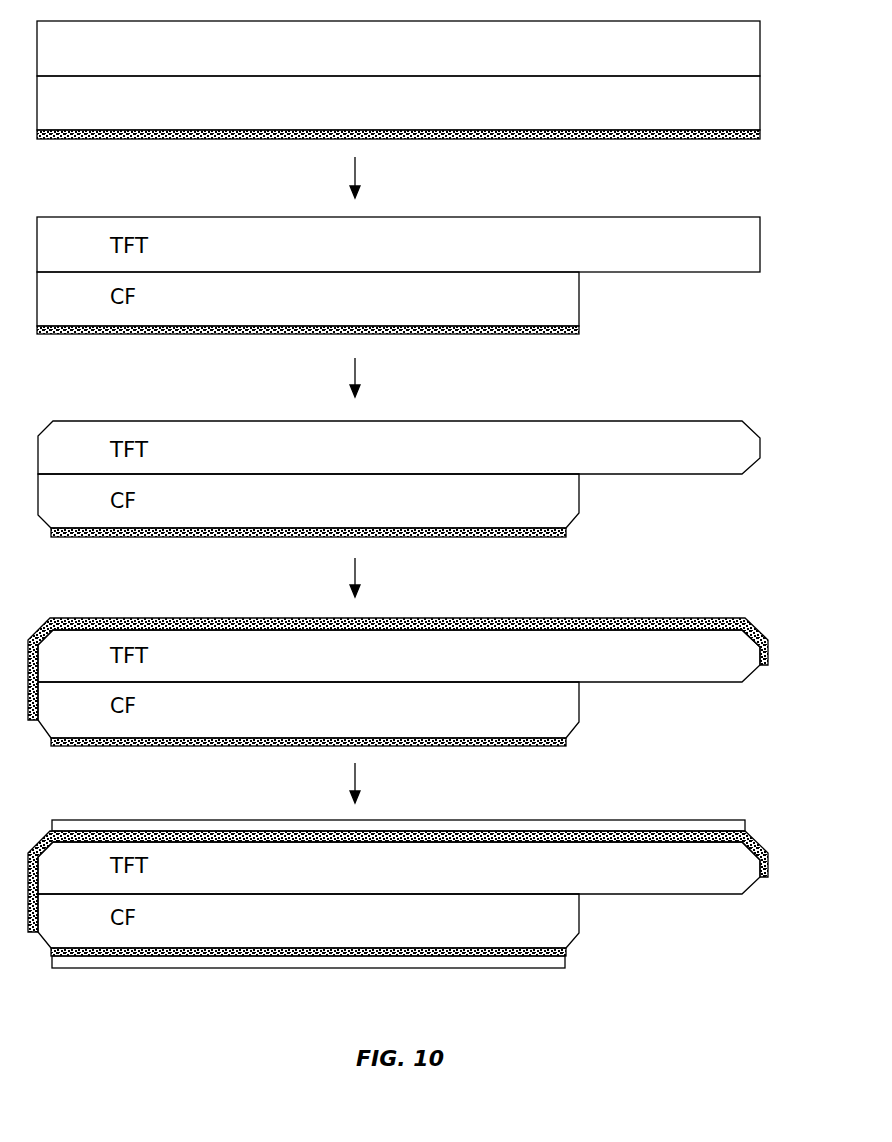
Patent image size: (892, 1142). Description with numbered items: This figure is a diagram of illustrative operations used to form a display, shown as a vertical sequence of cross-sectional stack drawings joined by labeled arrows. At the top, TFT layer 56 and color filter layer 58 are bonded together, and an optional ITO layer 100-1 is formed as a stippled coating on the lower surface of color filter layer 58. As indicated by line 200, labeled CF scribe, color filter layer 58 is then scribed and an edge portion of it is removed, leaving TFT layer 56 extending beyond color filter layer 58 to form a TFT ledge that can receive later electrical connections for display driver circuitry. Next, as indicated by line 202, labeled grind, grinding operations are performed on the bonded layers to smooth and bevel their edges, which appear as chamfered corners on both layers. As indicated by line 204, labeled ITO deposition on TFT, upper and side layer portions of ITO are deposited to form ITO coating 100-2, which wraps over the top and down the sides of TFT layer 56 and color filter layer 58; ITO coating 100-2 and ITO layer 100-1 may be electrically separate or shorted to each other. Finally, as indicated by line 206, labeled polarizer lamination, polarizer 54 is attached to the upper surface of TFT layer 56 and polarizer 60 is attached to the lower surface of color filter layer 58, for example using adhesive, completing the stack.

The TFT layer 56 is at (747, 45).
The color filter layer 58 is at (747, 96).
The ITO layer 100-1 is at (63, 140).
The ITO coating 100-2 is at (91, 618).
The line 200 is at (352, 168).
The line 202 is at (352, 368).
The line 204 is at (352, 568).
The line 206 is at (352, 773).
The polarizer 54 is at (704, 820).
The polarizer 60 is at (522, 962).